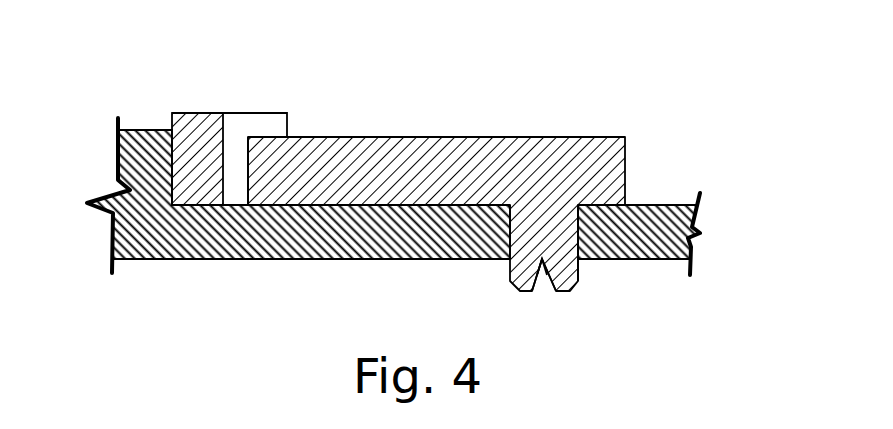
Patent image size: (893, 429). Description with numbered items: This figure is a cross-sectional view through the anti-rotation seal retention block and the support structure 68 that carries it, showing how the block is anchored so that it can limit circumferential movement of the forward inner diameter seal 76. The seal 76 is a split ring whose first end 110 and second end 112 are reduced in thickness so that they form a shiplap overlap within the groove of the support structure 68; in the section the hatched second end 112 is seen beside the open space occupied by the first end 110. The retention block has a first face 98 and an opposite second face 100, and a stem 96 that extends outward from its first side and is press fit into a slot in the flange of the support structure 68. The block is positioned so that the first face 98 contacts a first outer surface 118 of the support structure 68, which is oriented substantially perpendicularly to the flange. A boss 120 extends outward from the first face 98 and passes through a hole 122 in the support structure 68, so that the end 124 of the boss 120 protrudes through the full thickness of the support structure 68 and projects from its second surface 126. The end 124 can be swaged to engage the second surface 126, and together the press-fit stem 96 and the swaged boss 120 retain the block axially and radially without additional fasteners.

The support structure 68 is at (378, 242).
The forward inner diameter seal 76 is at (186, 172).
The stem 96 is at (480, 177).
The first face 98 is at (478, 213).
The second face 100 is at (513, 131).
The first end 110 is at (252, 132).
The second end 112 is at (198, 113).
The first outer surface 118 is at (268, 196).
The boss 120 is at (543, 232).
The hole 122 is at (580, 230).
The end 124 is at (541, 278).
The second surface 126 is at (292, 267).